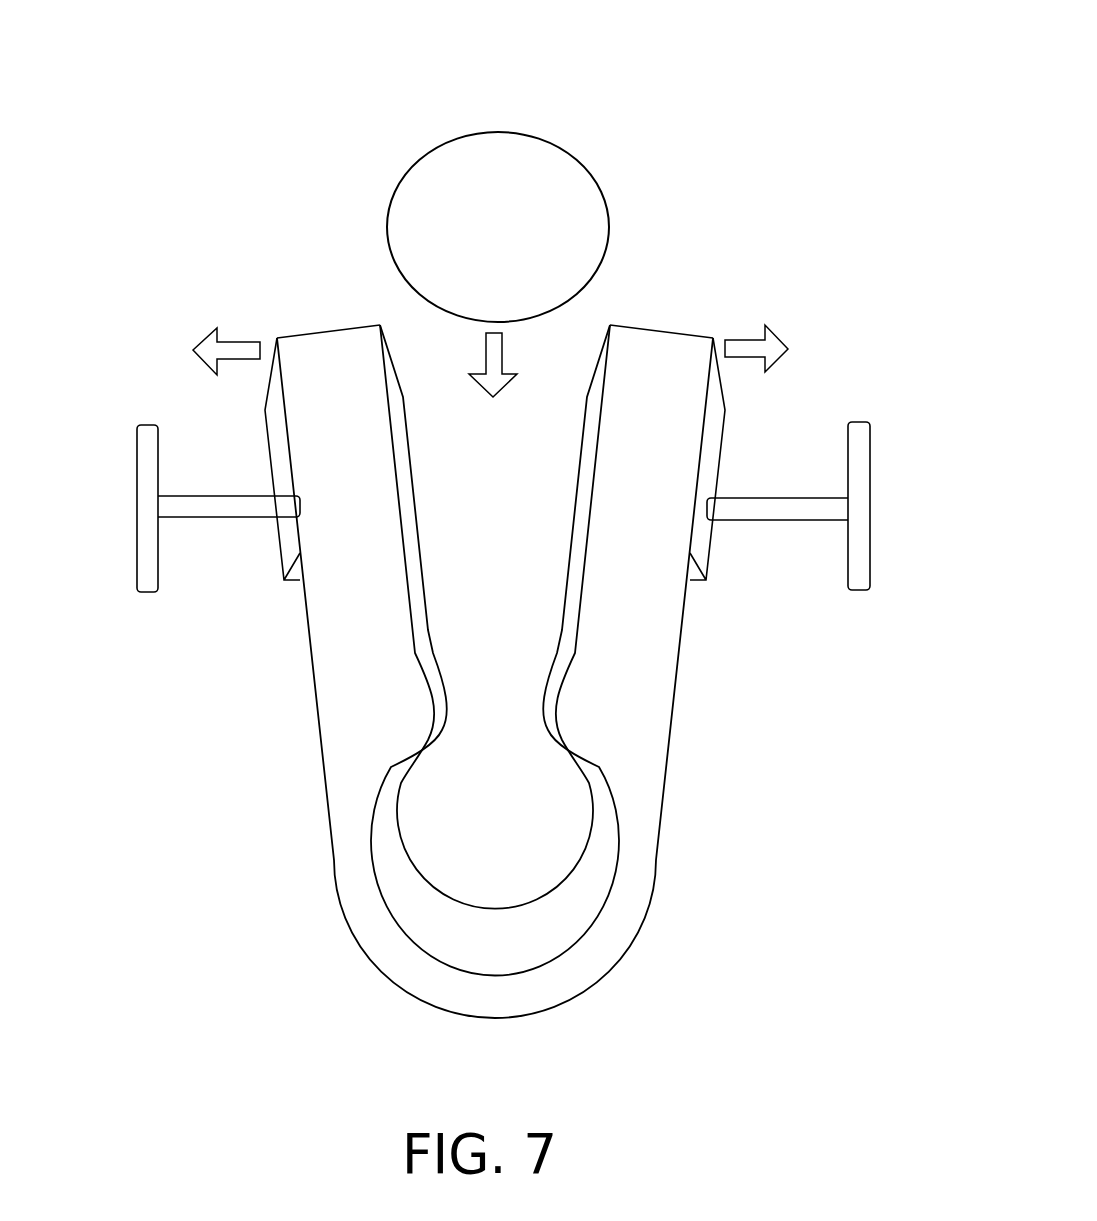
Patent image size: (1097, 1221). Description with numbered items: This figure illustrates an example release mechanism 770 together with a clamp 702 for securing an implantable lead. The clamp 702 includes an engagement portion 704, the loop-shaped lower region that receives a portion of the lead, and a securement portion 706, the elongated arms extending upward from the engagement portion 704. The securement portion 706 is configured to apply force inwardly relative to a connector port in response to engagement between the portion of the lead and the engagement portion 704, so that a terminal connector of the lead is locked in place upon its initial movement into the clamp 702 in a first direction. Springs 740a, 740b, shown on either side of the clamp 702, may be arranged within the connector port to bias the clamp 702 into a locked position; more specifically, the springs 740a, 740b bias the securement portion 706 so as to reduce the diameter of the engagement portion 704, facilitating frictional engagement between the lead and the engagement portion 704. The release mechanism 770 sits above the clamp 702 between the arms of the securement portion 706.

The release mechanism 770 is at (578, 145).
The clamp 702 is at (460, 638).
The engagement portion 704 is at (368, 882).
The securement portion 706 is at (338, 472).
The spring 740a is at (147, 463).
The spring 740b is at (858, 502).